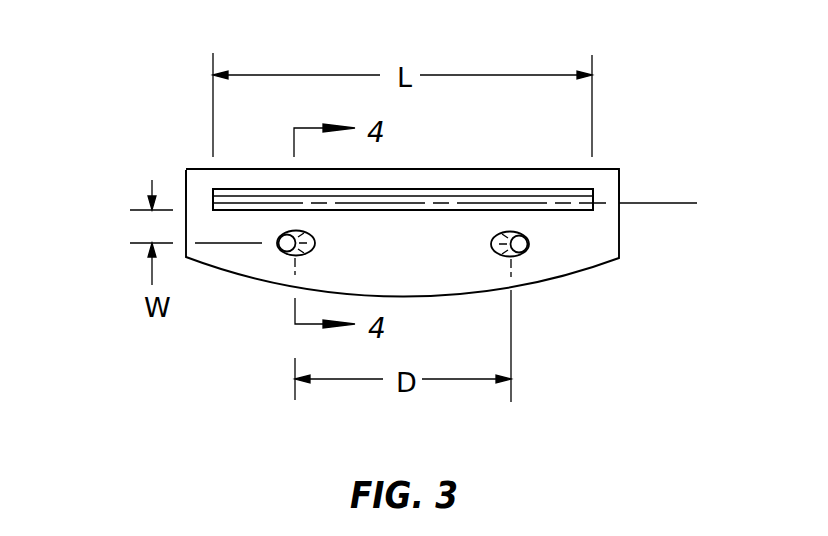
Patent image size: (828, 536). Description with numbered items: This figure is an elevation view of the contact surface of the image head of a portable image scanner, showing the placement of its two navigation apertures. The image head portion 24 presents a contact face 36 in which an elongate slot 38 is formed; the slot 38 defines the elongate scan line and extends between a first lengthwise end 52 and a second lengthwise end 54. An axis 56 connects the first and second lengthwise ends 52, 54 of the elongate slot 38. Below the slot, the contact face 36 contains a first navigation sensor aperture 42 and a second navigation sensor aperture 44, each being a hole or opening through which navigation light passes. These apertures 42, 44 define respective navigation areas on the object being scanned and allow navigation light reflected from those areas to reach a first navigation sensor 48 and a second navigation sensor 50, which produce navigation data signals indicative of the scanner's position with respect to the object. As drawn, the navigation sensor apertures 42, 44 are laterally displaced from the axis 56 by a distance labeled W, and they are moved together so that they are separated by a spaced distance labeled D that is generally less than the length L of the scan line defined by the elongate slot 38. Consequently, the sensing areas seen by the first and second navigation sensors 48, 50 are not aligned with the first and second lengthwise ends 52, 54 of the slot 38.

The image head portion 24 is at (143, 72).
The contact face 36 is at (421, 251).
The elongate slot 38 is at (497, 189).
The first navigation sensor aperture 42 is at (316, 248).
The second navigation sensor aperture 44 is at (490, 252).
The first navigation sensor 48 is at (285, 254).
The second navigation sensor 50 is at (532, 252).
The first lengthwise end 52 is at (213, 189).
The second lengthwise end 54 is at (597, 192).
The axis 56 is at (678, 204).